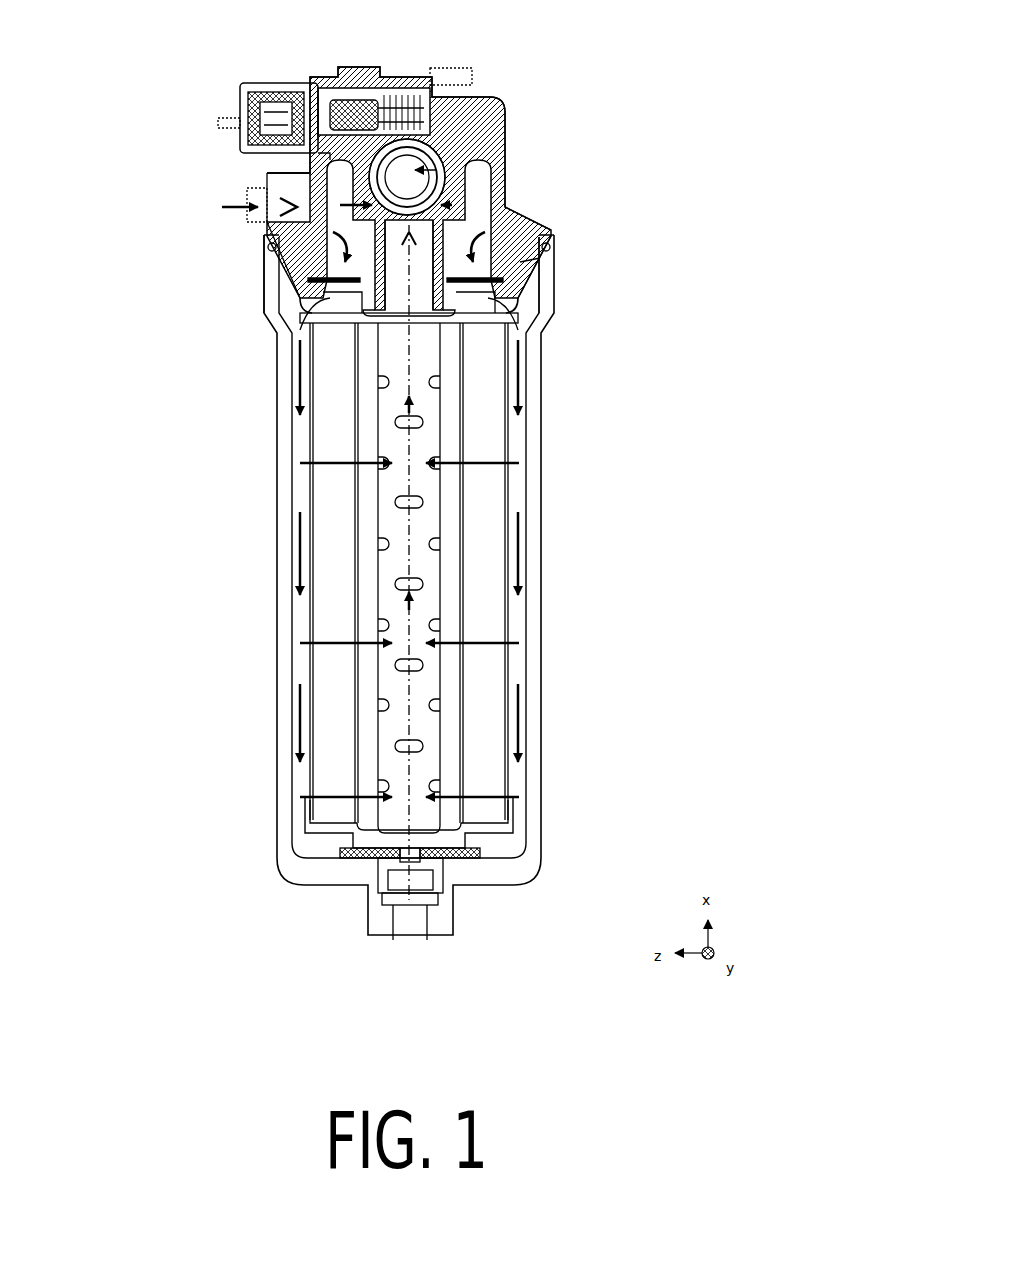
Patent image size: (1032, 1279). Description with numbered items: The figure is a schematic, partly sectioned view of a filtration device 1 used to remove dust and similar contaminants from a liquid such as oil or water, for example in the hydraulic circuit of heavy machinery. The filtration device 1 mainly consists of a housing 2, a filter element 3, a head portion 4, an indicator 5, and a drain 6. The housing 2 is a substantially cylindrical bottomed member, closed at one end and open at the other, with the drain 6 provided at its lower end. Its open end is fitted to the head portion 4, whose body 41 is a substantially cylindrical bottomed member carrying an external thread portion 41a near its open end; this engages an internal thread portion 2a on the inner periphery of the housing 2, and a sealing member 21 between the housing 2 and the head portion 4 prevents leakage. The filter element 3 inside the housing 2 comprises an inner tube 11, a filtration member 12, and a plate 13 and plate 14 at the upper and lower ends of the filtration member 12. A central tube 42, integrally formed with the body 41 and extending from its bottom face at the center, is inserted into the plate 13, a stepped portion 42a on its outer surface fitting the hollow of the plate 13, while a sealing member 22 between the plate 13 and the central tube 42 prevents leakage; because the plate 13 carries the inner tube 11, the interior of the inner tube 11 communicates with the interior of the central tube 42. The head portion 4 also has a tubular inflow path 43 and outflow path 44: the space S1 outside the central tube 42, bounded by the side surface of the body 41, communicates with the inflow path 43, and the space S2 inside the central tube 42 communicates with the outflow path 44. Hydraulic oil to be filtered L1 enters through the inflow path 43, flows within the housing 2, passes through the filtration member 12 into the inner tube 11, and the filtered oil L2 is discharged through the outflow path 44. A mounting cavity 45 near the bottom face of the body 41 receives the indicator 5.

The filtration device 1 is at (600, 56).
The housing 2 is at (541, 525).
The internal thread portion 2a is at (527, 283).
The filter element 3 is at (411, 577).
The head portion 4 is at (480, 112).
The indicator 5 is at (288, 90).
The drain 6 is at (411, 922).
The inner tube 11 is at (378, 548).
The filtration member 12 is at (333, 525).
The plate 13 is at (352, 322).
The plate 14 is at (317, 827).
The sealing member 21 is at (268, 245).
The sealing member 22 is at (527, 310).
The body 41 is at (500, 243).
The external thread portion 41a is at (525, 273).
The central tube 42 is at (507, 214).
The stepped portion 42a is at (292, 283).
The inflow path 43 is at (252, 190).
The outflow path 44 is at (508, 160).
The mounting cavity 45 is at (432, 88).
The hydraulic oil to be filtered L1 is at (582, 656).
The filtered hydraulic oil L2 is at (355, 663).
The space S1 is at (320, 165).
The space S2 is at (500, 194).